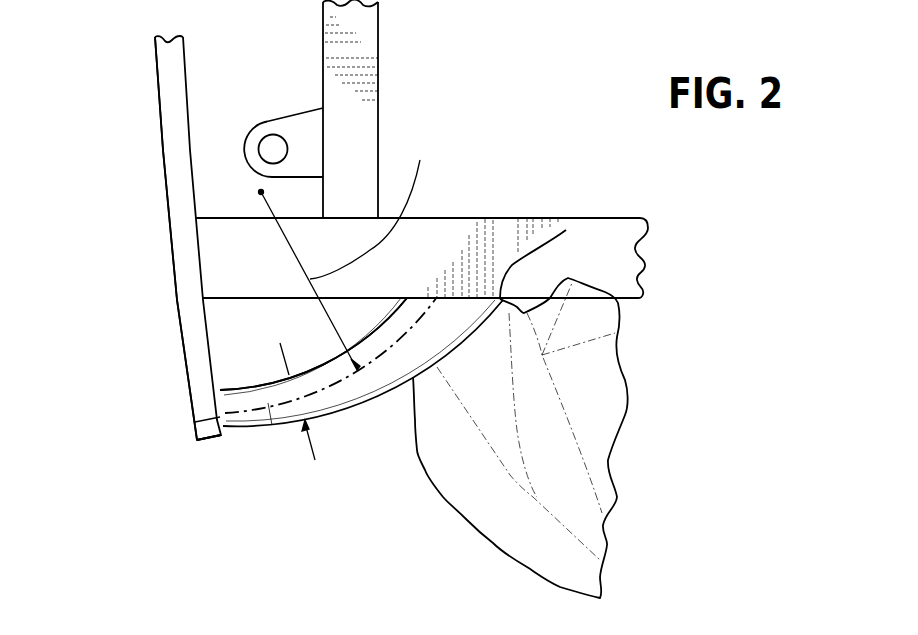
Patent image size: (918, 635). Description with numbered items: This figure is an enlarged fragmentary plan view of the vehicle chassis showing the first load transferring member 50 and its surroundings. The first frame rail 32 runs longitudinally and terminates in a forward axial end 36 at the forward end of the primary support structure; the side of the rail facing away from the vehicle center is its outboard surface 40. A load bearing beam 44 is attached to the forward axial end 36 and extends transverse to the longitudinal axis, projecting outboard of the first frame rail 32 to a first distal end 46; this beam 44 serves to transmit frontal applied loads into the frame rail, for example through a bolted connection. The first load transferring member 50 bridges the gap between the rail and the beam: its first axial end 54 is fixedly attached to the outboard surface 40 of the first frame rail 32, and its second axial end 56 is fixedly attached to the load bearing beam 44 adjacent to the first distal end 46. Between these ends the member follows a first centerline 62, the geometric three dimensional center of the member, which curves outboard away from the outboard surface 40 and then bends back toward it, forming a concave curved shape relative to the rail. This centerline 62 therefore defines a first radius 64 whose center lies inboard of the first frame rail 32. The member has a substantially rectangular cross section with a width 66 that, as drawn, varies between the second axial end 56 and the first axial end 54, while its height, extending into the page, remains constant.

The first frame rail 32 is at (462, 218).
The forward axial end 36 is at (198, 257).
The outboard surface 40 is at (628, 298).
The load bearing beam 44 is at (161, 141).
The first distal end 46 is at (212, 440).
The first load transferring member 50 is at (332, 413).
The first axial end 54 is at (566, 230).
The second axial end 56 is at (195, 422).
The first centerline 62 is at (272, 425).
The first radius 64 is at (370, 208).
The width 66 is at (290, 378).